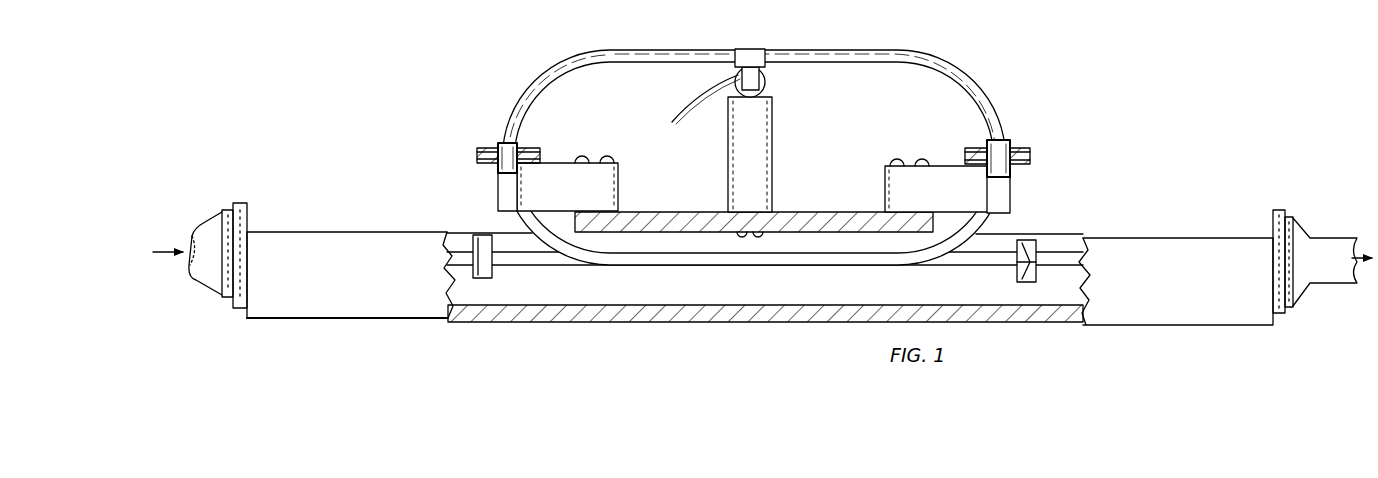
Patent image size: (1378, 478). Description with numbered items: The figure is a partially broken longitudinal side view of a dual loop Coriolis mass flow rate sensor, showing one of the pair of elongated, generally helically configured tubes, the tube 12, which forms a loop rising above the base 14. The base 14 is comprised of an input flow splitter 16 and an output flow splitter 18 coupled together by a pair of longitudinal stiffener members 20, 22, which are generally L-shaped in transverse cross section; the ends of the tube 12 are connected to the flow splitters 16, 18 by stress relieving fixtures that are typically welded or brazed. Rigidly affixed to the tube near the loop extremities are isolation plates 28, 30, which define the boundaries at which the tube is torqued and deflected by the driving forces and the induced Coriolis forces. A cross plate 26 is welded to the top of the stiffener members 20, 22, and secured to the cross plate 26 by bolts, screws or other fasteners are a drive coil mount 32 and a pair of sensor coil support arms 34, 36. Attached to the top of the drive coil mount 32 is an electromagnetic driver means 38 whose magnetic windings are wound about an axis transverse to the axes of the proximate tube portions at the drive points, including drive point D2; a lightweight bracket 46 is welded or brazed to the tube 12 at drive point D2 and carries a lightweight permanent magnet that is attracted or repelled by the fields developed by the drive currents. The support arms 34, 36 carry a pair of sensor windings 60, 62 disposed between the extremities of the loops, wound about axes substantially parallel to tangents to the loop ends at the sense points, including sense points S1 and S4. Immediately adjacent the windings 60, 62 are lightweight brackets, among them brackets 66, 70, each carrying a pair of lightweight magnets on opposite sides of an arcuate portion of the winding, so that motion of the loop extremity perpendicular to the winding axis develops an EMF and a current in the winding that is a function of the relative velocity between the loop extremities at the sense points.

The tube 12 is at (753, 141).
The base 14 is at (762, 270).
The input flow splitter 16 is at (292, 232).
The output flow splitter 18 is at (1187, 238).
The longitudinal stiffener member 20 is at (418, 312).
The longitudinal stiffener member 22 is at (587, 300).
The cross plate 26 is at (677, 210).
The isolation plate 28 is at (468, 240).
The isolation plate 30 is at (1045, 241).
The drive coil mount 32 is at (767, 158).
The sensor coil support arm 34 is at (563, 173).
The sensor coil support arm 36 is at (937, 178).
The electromagnetic driver means 38 is at (767, 83).
The bracket 46 is at (705, 50).
The sensor winding 60 is at (480, 155).
The sensor winding 62 is at (1032, 157).
The bracket 66 is at (504, 140).
The bracket 70 is at (1010, 140).
The drive point D2 is at (763, 48).
The sense point S1 is at (537, 140).
The sense point S4 is at (1016, 177).